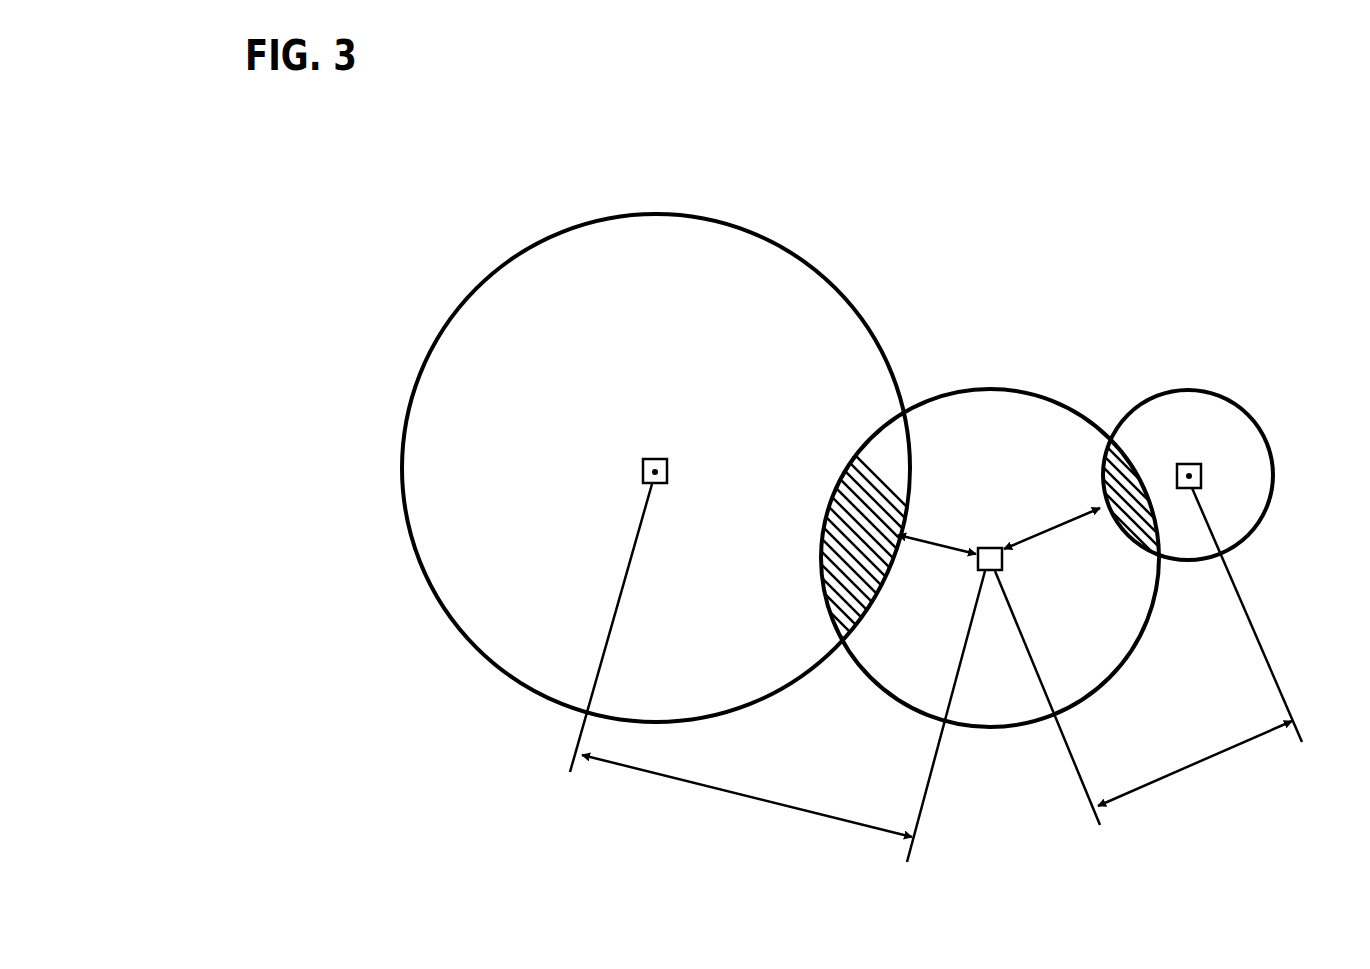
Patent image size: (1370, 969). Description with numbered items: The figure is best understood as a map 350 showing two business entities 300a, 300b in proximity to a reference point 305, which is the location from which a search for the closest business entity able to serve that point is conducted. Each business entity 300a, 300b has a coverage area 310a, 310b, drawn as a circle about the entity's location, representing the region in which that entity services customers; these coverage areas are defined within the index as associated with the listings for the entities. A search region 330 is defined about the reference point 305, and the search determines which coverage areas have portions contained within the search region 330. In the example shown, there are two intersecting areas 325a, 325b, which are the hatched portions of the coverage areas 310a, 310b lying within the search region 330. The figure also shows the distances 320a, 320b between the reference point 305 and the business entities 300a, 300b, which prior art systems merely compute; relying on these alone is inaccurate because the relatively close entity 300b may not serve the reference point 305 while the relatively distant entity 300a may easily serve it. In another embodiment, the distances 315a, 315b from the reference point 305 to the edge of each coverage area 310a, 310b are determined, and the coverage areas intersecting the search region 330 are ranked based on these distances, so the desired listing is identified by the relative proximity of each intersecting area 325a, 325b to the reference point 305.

The business entity 300a is at (628, 473).
The business entity 300b is at (1212, 475).
The reference point 305 is at (1010, 562).
The coverage area 310a is at (680, 205).
The coverage area 310b is at (1182, 385).
The distance to edge of coverage area 315a is at (942, 552).
The distance to edge of coverage area 315b is at (1032, 527).
The distance 320a is at (777, 673).
The distance 320b is at (1148, 656).
The intersecting area 325a is at (820, 530).
The intersecting area 325b is at (1093, 477).
The search region 330 is at (950, 390).
The map 350 is at (368, 889).